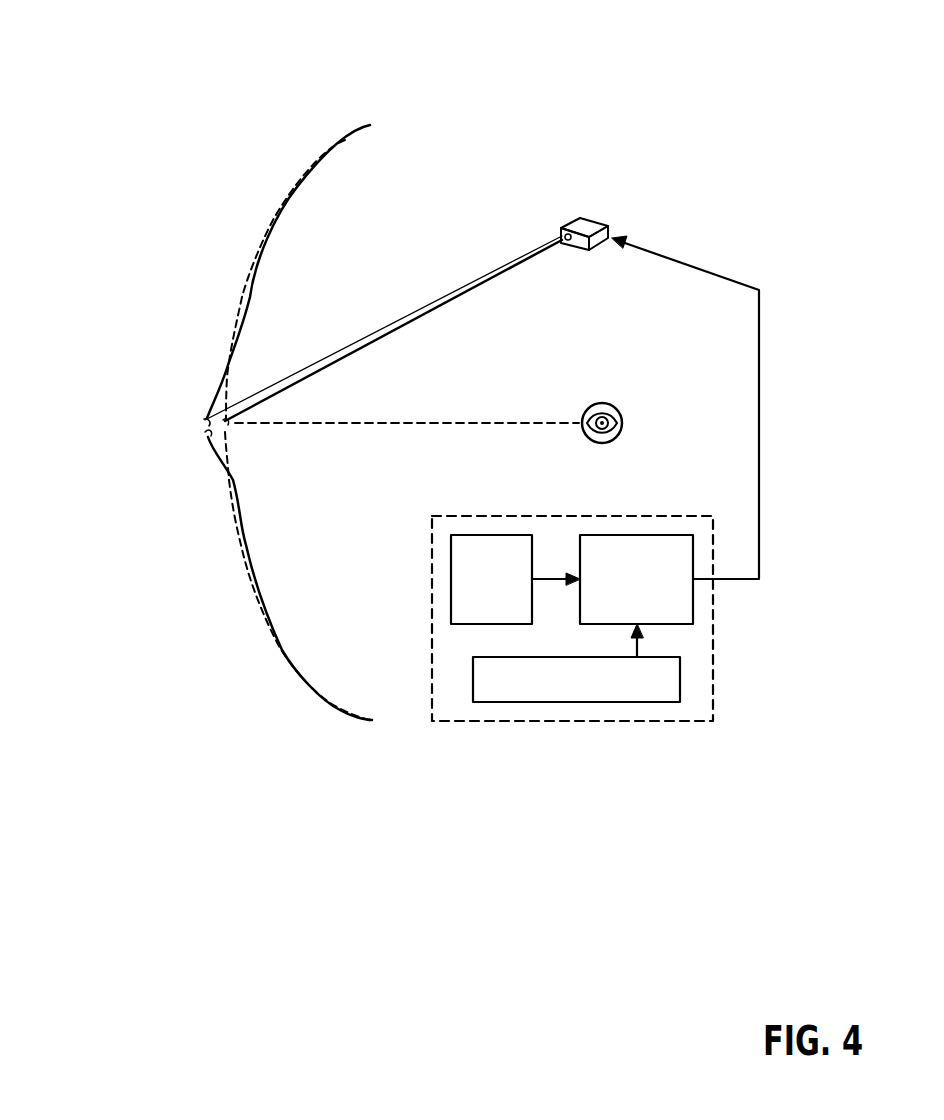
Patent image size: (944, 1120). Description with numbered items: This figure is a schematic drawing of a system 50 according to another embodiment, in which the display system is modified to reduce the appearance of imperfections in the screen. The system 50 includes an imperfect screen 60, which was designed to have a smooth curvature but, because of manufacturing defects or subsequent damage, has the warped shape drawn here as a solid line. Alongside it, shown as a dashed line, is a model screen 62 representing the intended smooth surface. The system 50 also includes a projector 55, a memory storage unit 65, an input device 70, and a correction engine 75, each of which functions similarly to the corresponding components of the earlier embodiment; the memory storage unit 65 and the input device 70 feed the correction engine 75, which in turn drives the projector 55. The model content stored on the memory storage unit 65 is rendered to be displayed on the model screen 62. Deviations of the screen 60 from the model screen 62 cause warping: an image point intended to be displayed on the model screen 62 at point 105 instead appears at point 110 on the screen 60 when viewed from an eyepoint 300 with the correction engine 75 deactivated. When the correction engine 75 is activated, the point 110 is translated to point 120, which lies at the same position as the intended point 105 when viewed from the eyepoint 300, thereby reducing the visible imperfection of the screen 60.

The system 50 is at (160, 103).
The projector 55 is at (589, 222).
The screen 60 is at (265, 247).
The model screen 62 is at (248, 273).
The memory storage unit 65 is at (508, 595).
The input device 70 is at (595, 693).
The correction engine 75 is at (655, 595).
The point 105 is at (227, 423).
The point 110 is at (205, 435).
The point 120 is at (203, 422).
The eyepoint 300 is at (604, 405).